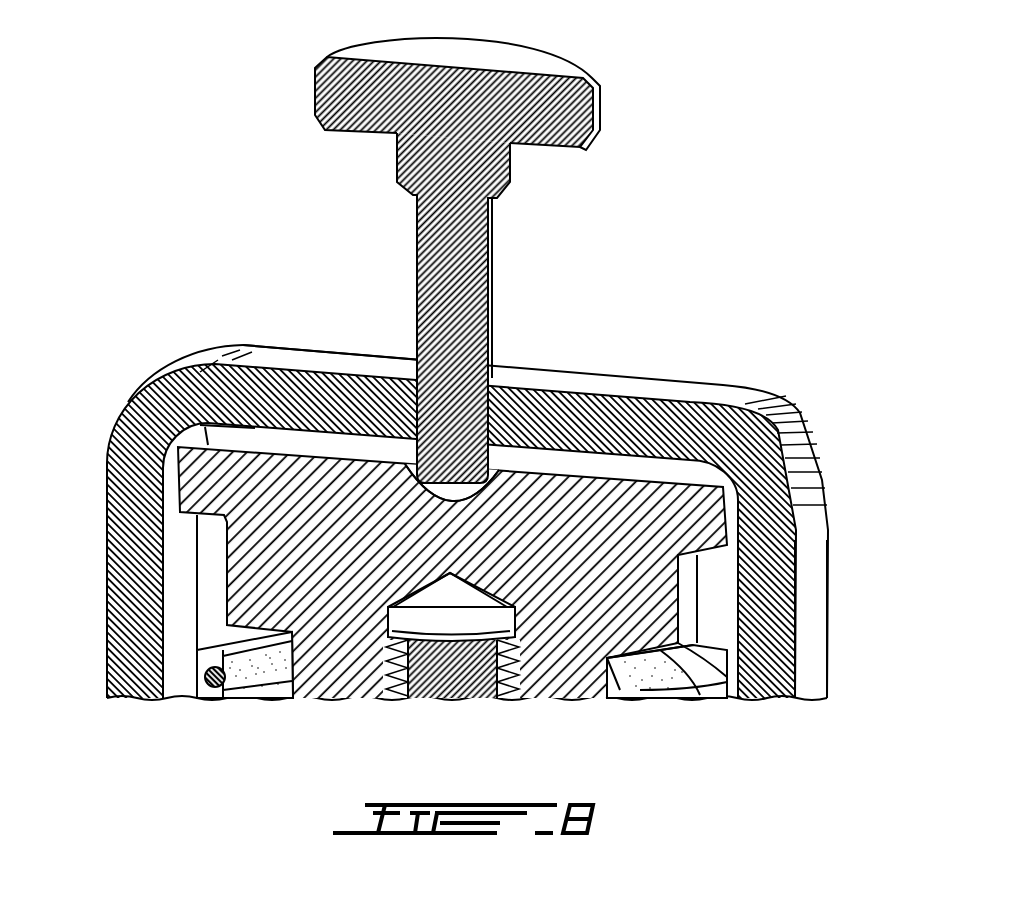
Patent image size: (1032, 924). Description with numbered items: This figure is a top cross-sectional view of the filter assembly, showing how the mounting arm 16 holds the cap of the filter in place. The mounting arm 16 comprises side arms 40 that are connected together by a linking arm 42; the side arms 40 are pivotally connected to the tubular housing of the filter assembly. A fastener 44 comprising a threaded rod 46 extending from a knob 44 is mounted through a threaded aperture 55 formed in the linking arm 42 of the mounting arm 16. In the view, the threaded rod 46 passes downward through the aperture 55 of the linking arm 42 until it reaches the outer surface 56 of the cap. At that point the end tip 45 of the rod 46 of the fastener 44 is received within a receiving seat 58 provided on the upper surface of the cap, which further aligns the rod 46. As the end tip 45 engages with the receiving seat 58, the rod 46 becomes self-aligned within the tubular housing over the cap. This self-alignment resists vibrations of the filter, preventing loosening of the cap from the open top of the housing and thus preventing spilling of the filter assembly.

The mounting arm 16 is at (773, 417).
The side arms 40 is at (133, 600).
The linking arm 42 is at (282, 367).
The fastener 44 is at (620, 100).
The end tip 45 is at (452, 483).
The threaded rod 46 is at (417, 250).
The threaded aperture 55 is at (490, 413).
The outer surface 56 is at (590, 463).
The receiving seat 58 is at (473, 493).